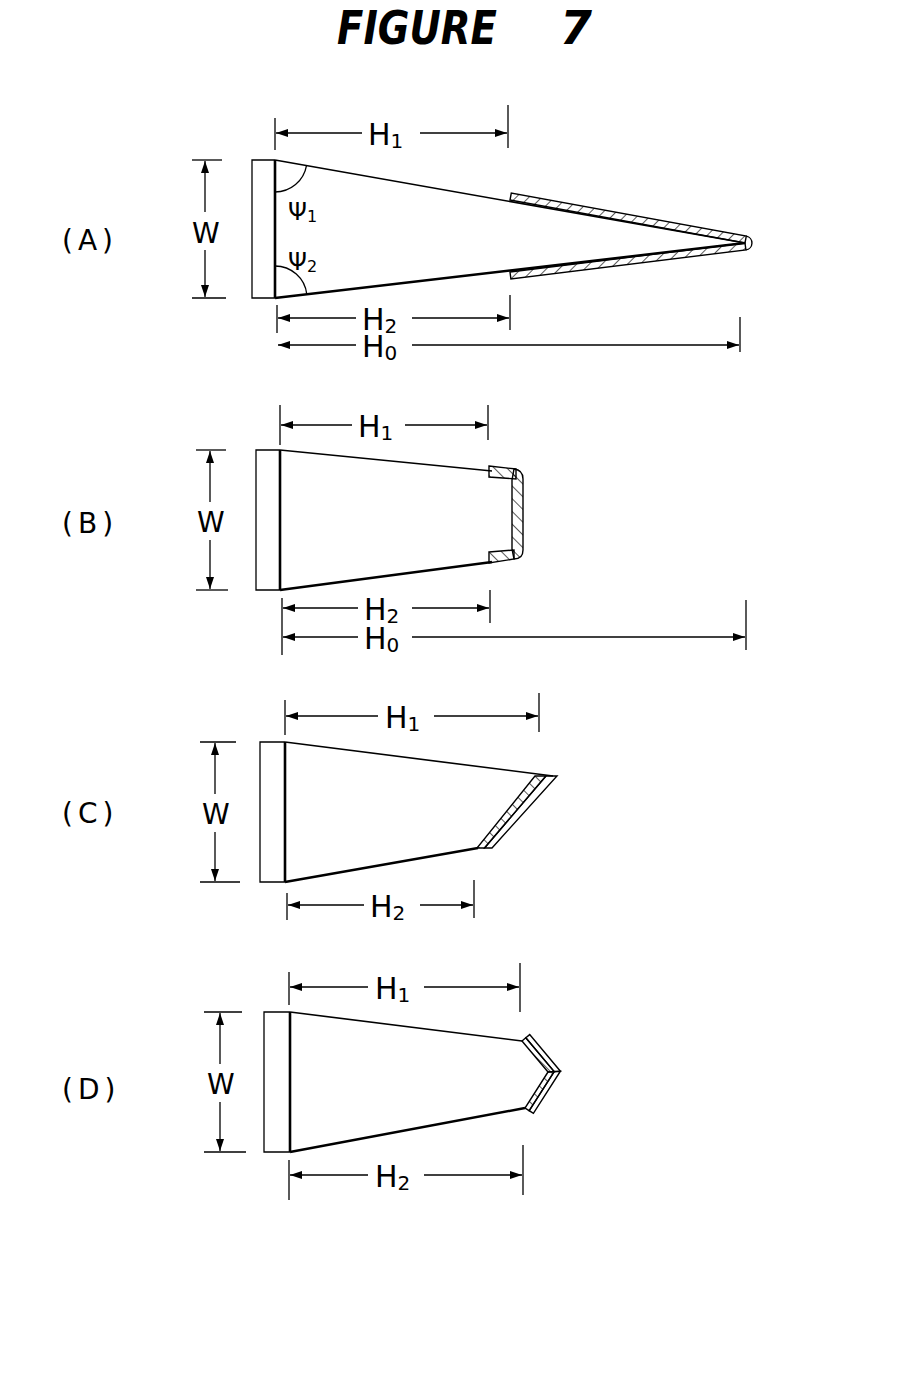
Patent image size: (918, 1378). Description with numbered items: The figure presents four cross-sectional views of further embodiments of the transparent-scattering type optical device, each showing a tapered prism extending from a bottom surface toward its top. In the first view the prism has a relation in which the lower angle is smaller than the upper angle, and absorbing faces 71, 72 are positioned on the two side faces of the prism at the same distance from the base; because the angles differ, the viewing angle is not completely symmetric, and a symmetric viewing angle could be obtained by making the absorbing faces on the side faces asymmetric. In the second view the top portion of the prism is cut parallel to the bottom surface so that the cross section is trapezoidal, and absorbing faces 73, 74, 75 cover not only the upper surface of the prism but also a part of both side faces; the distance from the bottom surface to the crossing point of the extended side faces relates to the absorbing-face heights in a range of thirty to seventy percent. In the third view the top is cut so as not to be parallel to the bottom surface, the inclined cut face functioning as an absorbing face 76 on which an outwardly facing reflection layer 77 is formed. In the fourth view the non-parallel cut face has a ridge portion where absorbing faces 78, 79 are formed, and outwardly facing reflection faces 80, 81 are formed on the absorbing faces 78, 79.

The absorbing face 71 is at (634, 259).
The absorbing face 72 is at (648, 214).
The absorbing face 73 is at (524, 506).
The absorbing face 74 is at (507, 468).
The absorbing face 75 is at (506, 563).
The absorbing face 76 is at (546, 784).
The outwardly facing reflection layer 77 is at (512, 828).
The absorbing face 78 is at (556, 1068).
The absorbing face 79 is at (551, 1096).
The outwardly facing reflection face 80 is at (540, 1052).
The outwardly facing reflection face 81 is at (544, 1112).